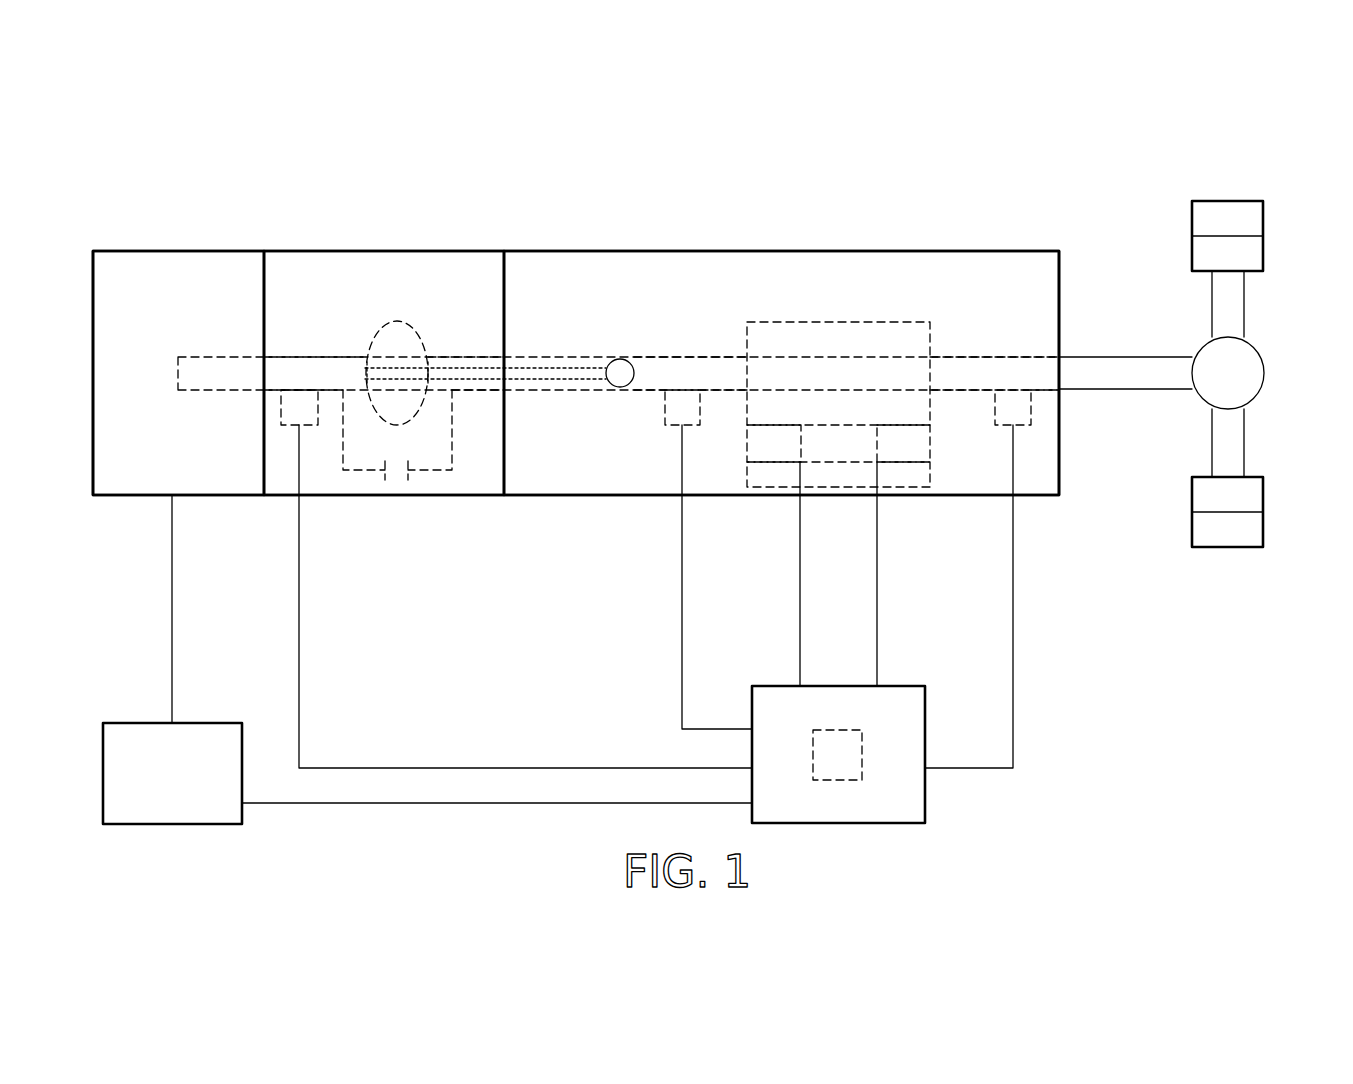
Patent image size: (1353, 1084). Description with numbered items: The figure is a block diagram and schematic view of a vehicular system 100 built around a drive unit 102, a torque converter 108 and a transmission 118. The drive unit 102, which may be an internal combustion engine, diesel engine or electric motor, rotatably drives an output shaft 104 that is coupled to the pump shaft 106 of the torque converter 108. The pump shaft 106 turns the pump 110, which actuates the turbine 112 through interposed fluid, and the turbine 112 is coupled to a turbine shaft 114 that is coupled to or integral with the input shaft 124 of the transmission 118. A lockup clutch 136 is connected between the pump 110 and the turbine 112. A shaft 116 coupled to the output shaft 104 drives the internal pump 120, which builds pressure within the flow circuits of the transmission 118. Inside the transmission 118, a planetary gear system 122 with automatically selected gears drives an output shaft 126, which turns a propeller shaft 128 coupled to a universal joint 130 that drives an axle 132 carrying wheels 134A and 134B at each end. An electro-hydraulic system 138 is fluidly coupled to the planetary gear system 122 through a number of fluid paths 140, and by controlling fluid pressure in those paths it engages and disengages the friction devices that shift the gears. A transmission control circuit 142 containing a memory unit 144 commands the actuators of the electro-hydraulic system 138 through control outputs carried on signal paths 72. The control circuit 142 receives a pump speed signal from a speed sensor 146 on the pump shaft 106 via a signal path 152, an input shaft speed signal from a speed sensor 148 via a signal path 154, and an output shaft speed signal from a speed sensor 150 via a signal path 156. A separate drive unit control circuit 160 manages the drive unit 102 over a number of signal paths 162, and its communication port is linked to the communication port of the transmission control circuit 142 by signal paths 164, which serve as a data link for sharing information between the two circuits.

The vehicular system 100 is at (140, 190).
The drive unit 102 is at (207, 251).
The output shaft 104 is at (208, 357).
The pump shaft 106 is at (300, 357).
The torque converter 108 is at (370, 251).
The pump 110 is at (380, 328).
The turbine 112 is at (415, 325).
The turbine shaft 114 is at (456, 357).
The shaft 116 is at (549, 382).
The transmission 118 is at (815, 251).
The internal pump 120 is at (626, 359).
The planetary gear system 122 is at (856, 387).
The input shaft 124 is at (700, 357).
The output shaft 126 is at (993, 357).
The propeller shaft 128 is at (1113, 357).
The universal joint 130 is at (1264, 366).
The axle 132 is at (1246, 308).
The wheel 134A is at (1222, 201).
The wheel 134B is at (1222, 548).
The lockup clutch 136 is at (410, 470).
The electro-hydraulic system 138 is at (900, 489).
The fluid paths 140 is at (922, 449).
The transmission control circuit 142 is at (865, 823).
The memory unit 144 is at (862, 748).
The speed sensor 146 is at (281, 408).
The speed sensor 148 is at (665, 408).
The speed sensor 150 is at (1031, 410).
The signal path 152 is at (420, 768).
The signal path 154 is at (682, 655).
The signal path 156 is at (1013, 620).
The drive unit control circuit 160 is at (110, 723).
The signal paths 162 is at (172, 568).
The signal paths 164 is at (365, 803).
The signal paths 72 is at (910, 599).